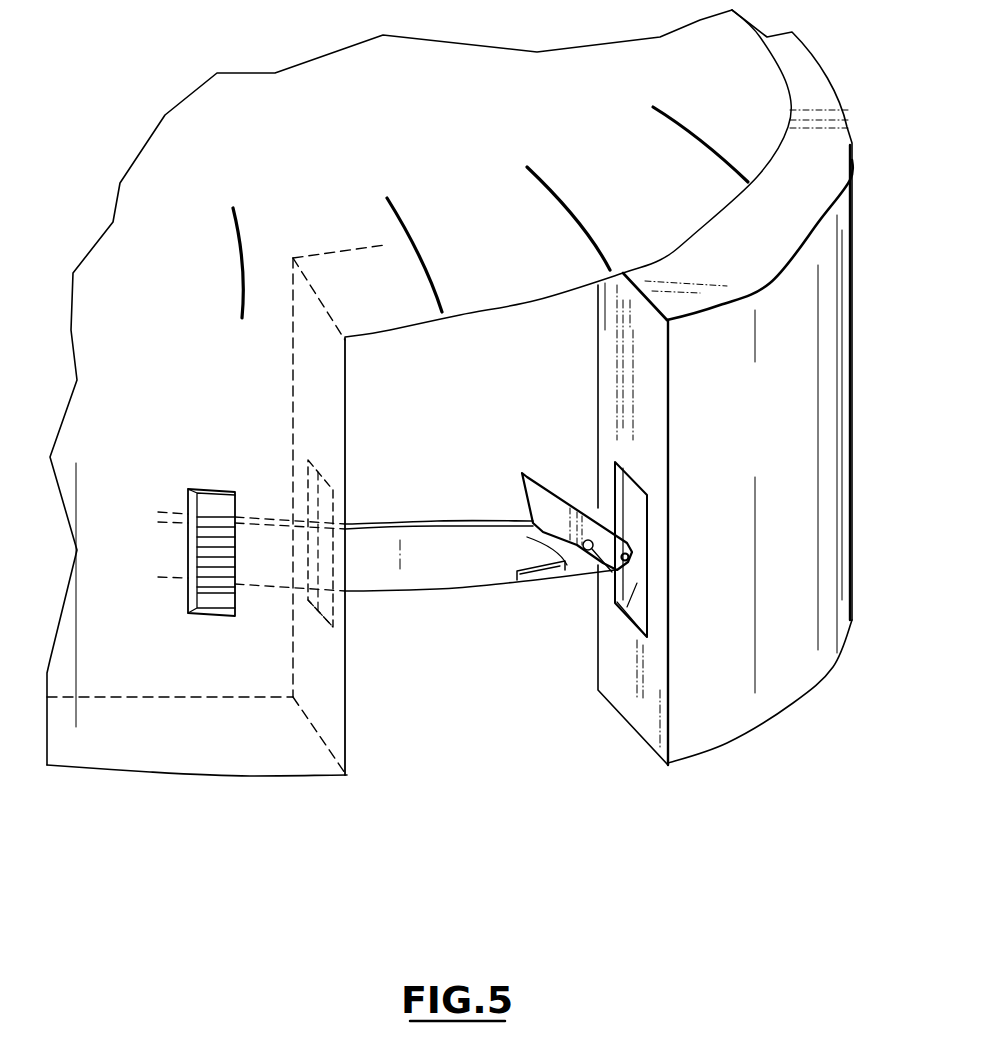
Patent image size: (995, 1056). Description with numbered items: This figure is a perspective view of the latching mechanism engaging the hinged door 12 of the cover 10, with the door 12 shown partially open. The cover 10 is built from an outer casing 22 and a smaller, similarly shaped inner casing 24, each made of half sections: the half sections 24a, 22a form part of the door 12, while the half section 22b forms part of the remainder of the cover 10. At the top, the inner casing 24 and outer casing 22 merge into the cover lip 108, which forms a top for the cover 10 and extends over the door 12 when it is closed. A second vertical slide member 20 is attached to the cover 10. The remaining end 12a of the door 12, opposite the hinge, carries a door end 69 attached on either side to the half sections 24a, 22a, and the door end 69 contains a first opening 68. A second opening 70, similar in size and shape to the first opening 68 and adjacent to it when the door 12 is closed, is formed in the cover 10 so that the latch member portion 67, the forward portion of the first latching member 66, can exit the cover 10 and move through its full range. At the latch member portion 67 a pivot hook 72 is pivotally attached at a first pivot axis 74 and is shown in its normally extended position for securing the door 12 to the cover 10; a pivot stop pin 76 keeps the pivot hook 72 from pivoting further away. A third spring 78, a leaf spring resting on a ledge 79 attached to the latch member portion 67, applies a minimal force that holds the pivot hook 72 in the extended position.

The cover 10 is at (130, 742).
The door 12 is at (803, 522).
The remaining end of the door 12a is at (676, 449).
The second vertical slide member 20 is at (197, 548).
The outer casing 22 is at (383, 305).
The half section of the outer casing 22a is at (660, 723).
The half section of the outer casing 22b is at (308, 762).
The inner casing 24 is at (406, 329).
The half section of the inner casing 24a is at (600, 312).
The first latching member 66 is at (273, 540).
The latch member portion 67 is at (386, 598).
The first opening 68 is at (620, 625).
The door end 69 is at (647, 410).
The second opening 70 is at (327, 470).
The pivot hook 72 is at (553, 494).
The first pivot axis 74 is at (622, 572).
The pivot stop pin 76 is at (629, 556).
The third spring 78 is at (533, 570).
The ledge 79 is at (527, 583).
The cover lip 108 is at (603, 173).